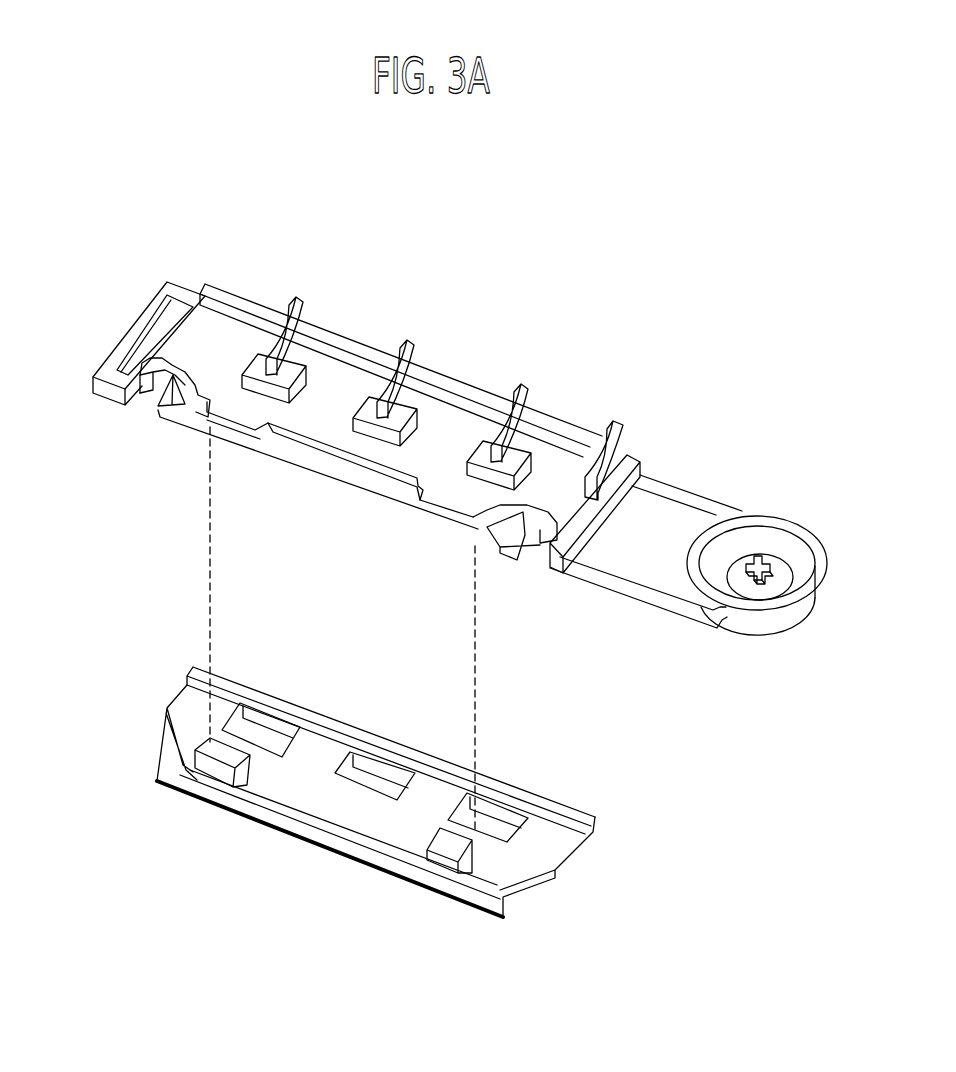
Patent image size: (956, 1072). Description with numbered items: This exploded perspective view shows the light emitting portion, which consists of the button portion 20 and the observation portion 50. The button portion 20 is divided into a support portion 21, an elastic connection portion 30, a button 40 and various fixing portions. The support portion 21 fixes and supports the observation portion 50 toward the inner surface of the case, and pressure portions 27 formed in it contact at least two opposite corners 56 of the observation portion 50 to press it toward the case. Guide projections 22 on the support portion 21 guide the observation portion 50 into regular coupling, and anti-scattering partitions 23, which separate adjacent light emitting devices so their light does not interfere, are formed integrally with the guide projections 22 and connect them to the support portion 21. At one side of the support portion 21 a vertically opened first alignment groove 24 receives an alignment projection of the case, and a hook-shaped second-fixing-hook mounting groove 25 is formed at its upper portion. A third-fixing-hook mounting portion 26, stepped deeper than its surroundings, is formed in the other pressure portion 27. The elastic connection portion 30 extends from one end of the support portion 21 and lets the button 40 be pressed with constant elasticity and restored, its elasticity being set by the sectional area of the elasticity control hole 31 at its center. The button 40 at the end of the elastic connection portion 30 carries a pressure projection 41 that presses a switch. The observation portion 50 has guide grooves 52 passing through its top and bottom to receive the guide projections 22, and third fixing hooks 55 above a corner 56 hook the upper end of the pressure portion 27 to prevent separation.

The button portion 20 is at (478, 353).
The support portion 21 is at (234, 293).
The guide projection 22 is at (330, 365).
The anti-scattering partition 23 is at (302, 300).
The first alignment groove 24 is at (145, 402).
The second-fixing-hook mounting groove 25 is at (163, 420).
The third-fixing-hook mounting portion 26 is at (450, 510).
The pressure portion 27 is at (553, 408).
The elastic connection portion 30 is at (684, 490).
The elasticity control hole 31 is at (655, 543).
The button 40 is at (748, 638).
The pressure projection 41 is at (760, 556).
The observation portion 50 is at (343, 878).
The guide groove 52 is at (250, 740).
The third fixing hook 55 is at (222, 760).
The corner 56 is at (362, 722).